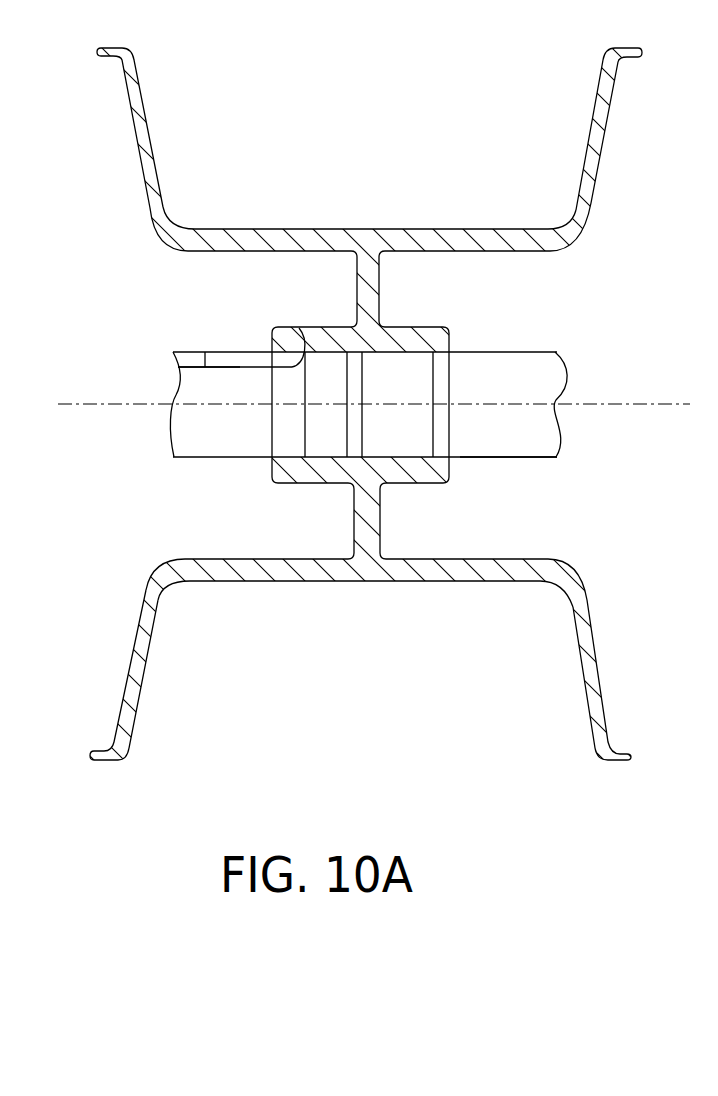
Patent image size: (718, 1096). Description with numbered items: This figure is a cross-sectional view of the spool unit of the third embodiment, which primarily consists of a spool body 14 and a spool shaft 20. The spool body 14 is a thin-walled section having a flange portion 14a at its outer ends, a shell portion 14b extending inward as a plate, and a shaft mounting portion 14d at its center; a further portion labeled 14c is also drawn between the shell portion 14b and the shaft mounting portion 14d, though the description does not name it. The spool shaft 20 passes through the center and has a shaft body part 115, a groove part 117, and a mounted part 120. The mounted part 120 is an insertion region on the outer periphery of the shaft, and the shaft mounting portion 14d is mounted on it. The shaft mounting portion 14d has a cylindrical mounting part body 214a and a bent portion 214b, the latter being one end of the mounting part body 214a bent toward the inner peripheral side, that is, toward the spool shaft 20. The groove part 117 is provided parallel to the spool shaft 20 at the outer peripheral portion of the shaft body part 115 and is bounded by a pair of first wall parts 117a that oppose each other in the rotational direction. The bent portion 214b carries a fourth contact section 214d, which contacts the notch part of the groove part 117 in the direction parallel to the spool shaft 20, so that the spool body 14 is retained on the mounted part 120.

The spool body 14 is at (466, 190).
The flange portion 14a is at (135, 700).
The shell portion 14b is at (282, 581).
The web portion 14c is at (380, 520).
The shaft mounting portion 14d is at (453, 326).
The spool shaft 20 is at (576, 378).
The shaft body part 115 is at (523, 447).
The groove part 117 is at (195, 367).
The first wall parts 117a is at (217, 362).
The mounted part 120 is at (333, 351).
The mounting part body 214a is at (323, 337).
The bent portion 214b is at (263, 360).
The fourth contact section 214d is at (303, 335).